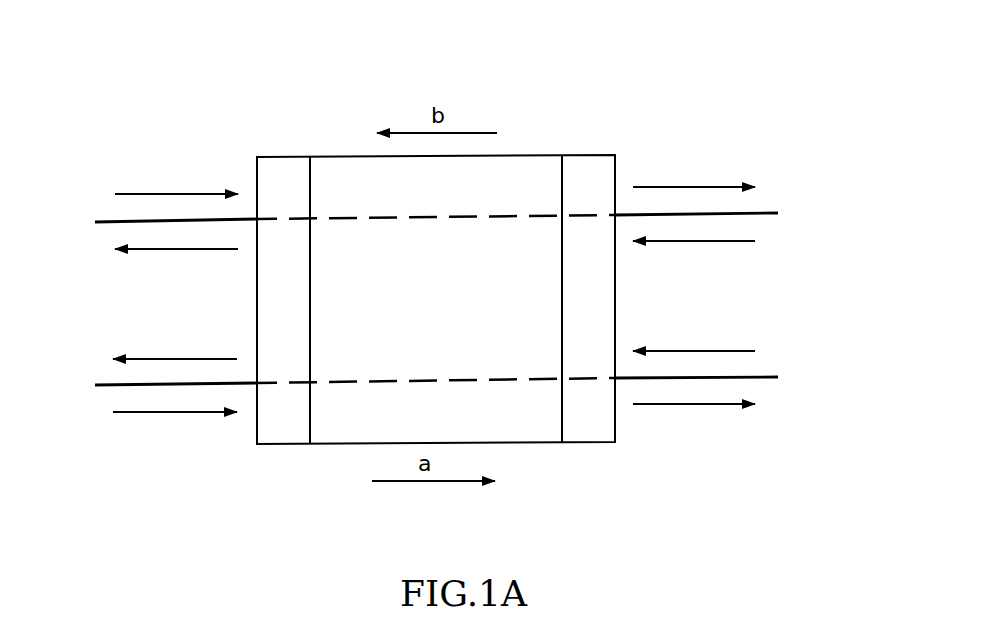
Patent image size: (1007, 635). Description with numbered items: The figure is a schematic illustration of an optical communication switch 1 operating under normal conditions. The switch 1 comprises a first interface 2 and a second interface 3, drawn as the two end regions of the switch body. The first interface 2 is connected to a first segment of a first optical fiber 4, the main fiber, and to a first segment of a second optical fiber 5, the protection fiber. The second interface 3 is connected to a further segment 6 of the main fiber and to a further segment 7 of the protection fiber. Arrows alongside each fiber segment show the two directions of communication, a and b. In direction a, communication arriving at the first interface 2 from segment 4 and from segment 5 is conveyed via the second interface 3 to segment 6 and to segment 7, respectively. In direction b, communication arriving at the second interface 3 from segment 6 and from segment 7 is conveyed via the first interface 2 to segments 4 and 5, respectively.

The optical communication switch 1 is at (645, 66).
The first interface 2 is at (283, 157).
The second interface 3 is at (581, 155).
The first segment of first optical fiber 4 is at (107, 385).
The first segment of second optical fiber 5 is at (107, 220).
The segment of first optical fiber 6 is at (767, 377).
The segment of second optical fiber 7 is at (770, 213).